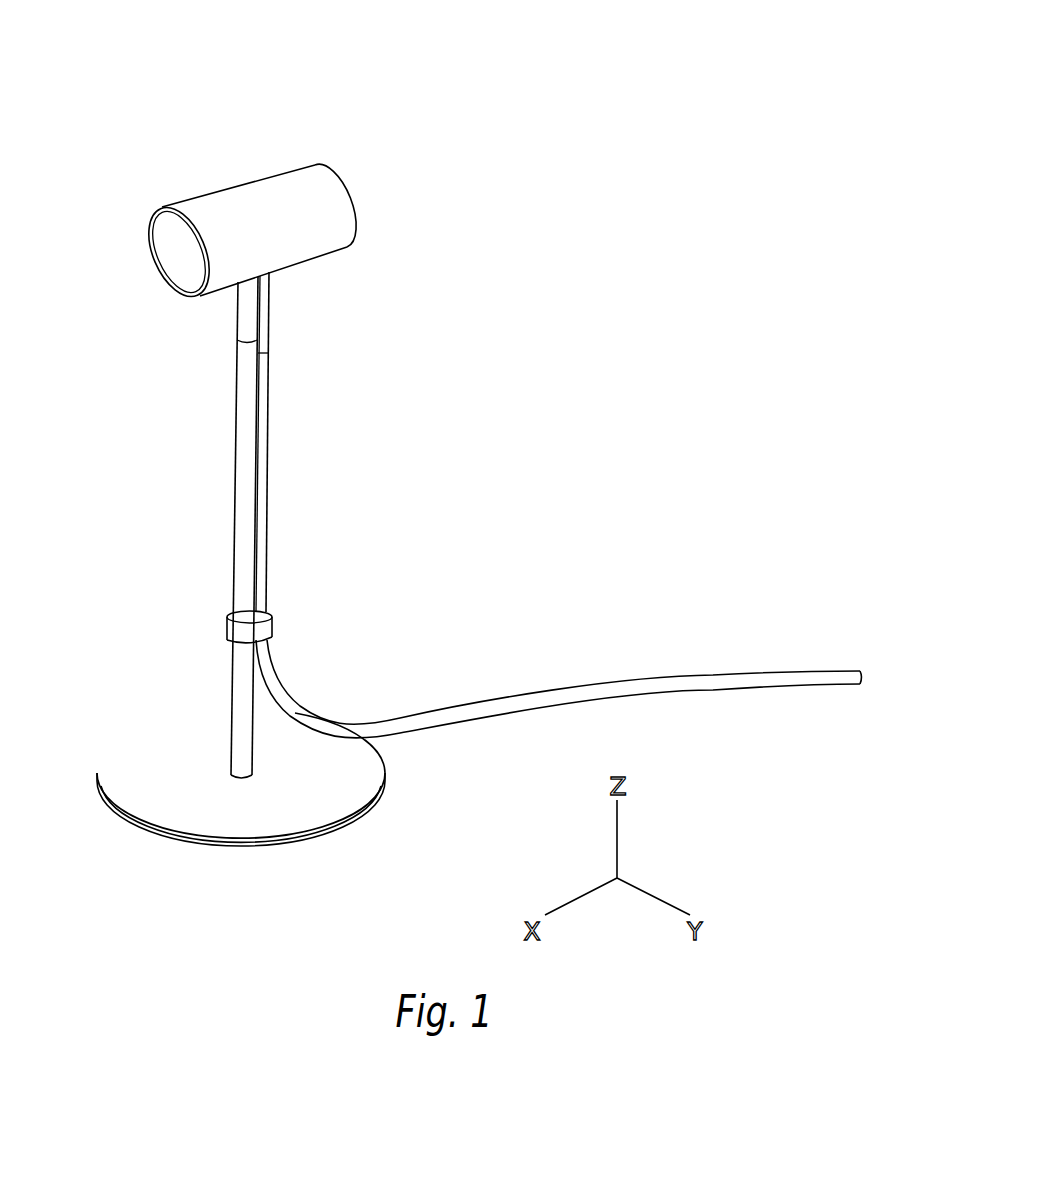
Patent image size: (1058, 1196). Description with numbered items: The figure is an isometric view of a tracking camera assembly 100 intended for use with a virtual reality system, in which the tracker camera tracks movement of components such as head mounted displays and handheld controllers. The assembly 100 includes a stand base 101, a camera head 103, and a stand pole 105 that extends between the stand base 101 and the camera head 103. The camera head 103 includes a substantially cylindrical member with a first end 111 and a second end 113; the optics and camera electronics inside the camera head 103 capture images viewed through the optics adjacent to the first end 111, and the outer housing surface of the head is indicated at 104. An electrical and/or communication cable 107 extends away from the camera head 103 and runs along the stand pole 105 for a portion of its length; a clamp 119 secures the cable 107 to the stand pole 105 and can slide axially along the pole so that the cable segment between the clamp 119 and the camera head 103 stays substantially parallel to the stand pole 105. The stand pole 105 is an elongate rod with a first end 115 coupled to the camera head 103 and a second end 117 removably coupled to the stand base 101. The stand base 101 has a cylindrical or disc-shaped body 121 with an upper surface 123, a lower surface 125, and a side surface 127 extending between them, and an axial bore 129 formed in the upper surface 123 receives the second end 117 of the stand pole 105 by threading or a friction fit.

The tracking camera assembly 100 is at (512, 80).
The stand base 101 is at (118, 741).
The camera head 103 is at (230, 188).
The housing outer surface 104 is at (292, 171).
The stand pole 105 is at (236, 412).
The cable 107 is at (270, 431).
The first end 111 is at (182, 275).
The second end 113 is at (352, 212).
The first end 115 is at (234, 288).
The second end 117 is at (228, 772).
The clamp 119 is at (272, 614).
The body 121 is at (184, 713).
The upper surface 123 is at (122, 788).
The lower surface 125 is at (227, 846).
The side surface 127 is at (157, 828).
The axial bore 129 is at (255, 777).